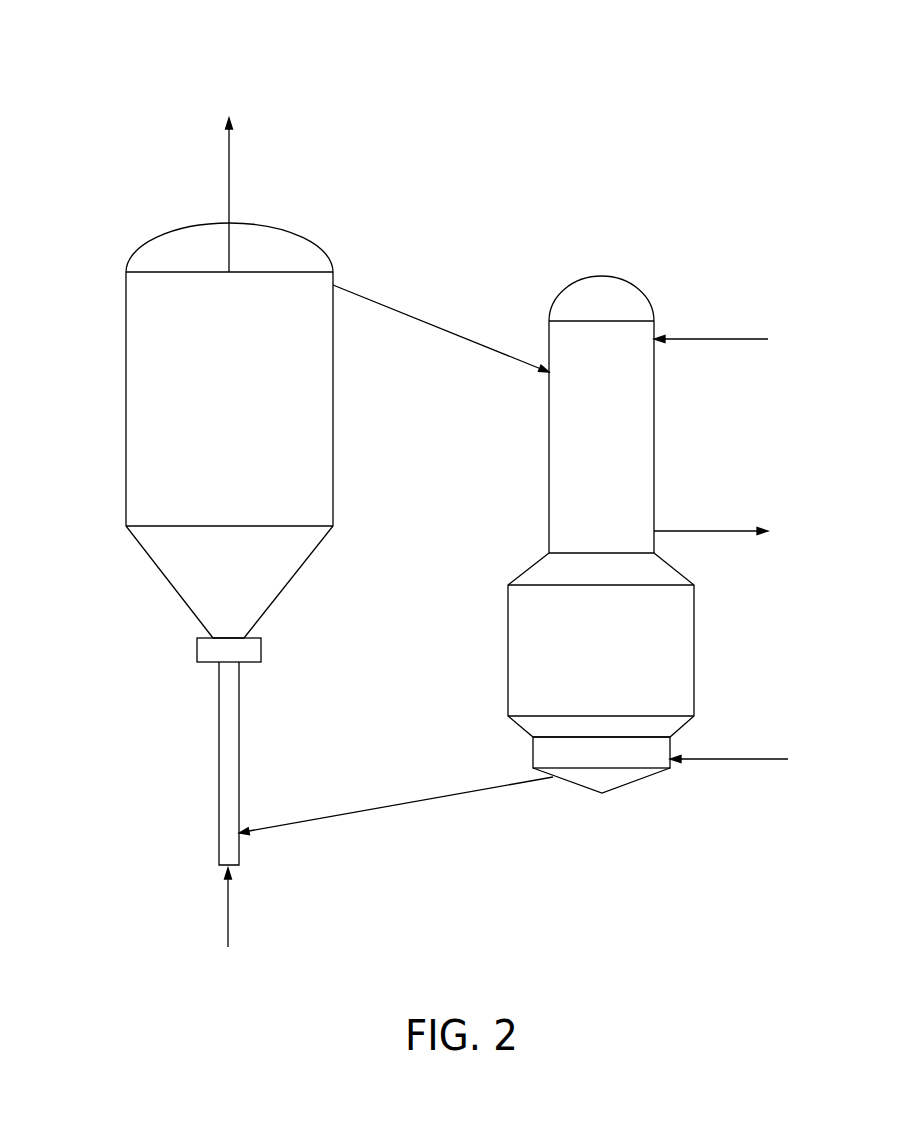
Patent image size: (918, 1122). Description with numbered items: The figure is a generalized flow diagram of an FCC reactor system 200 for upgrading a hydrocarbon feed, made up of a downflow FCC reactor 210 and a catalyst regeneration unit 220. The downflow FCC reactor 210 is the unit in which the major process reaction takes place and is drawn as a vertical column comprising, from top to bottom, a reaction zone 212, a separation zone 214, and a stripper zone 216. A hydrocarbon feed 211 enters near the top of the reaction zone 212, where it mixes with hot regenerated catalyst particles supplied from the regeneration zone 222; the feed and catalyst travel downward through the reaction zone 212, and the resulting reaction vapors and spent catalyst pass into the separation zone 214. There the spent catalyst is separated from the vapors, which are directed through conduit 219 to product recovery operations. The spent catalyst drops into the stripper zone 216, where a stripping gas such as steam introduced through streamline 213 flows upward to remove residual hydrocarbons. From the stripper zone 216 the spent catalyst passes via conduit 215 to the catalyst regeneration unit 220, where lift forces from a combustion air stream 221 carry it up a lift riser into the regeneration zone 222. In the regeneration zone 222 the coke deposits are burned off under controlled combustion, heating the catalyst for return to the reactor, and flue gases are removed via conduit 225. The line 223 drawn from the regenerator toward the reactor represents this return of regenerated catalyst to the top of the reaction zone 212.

The FCC reactor system 200 is at (92, 47).
The downflow FCC reactor 210 is at (613, 534).
The hydrocarbon feed 211 is at (710, 339).
The reaction zone 212 is at (628, 445).
The streamline 213 is at (728, 759).
The separation zone 214 is at (628, 665).
The conduit 215 is at (400, 803).
The stripper zone 216 is at (533, 752).
The conduit 219 is at (710, 531).
The catalyst regeneration unit 220 is at (195, 544).
The combustion air stream 221 is at (228, 907).
The regeneration zone 222 is at (253, 412).
The transfer line to reactor 223 is at (440, 328).
The conduit 225 is at (229, 172).